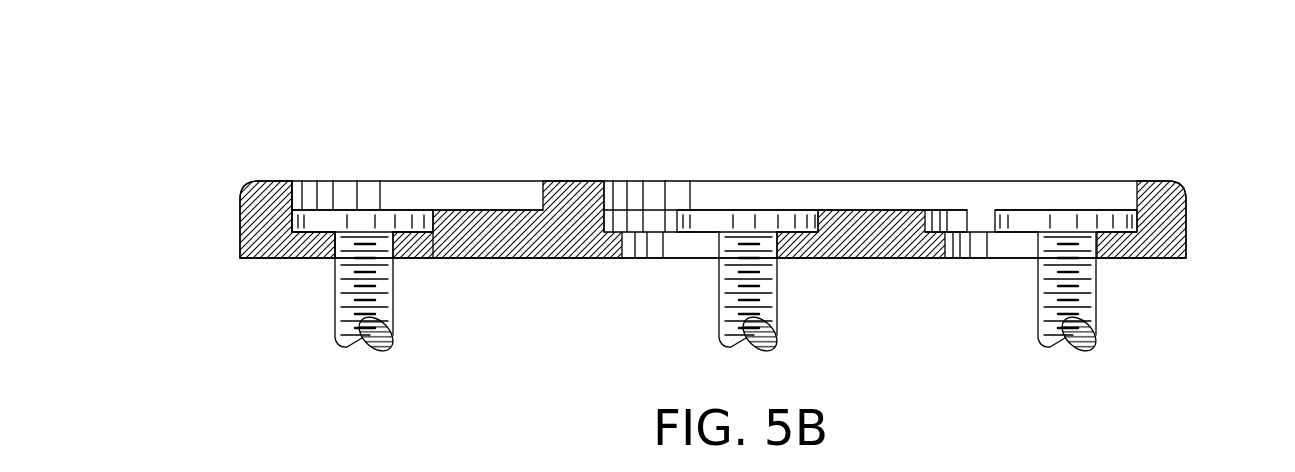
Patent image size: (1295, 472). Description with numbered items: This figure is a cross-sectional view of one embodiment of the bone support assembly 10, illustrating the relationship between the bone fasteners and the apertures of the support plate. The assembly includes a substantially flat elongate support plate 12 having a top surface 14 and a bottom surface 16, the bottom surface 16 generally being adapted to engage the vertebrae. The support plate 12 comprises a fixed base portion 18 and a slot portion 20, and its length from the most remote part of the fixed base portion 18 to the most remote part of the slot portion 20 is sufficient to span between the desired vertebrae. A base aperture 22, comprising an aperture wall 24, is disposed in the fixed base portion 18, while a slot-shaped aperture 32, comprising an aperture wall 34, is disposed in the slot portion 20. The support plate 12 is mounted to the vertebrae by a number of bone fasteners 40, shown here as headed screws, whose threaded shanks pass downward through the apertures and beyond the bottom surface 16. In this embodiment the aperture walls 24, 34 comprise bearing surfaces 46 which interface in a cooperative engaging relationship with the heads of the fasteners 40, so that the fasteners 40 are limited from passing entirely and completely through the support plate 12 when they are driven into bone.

The bone support assembly 10 is at (1092, 104).
The support plate 12 is at (558, 178).
The top surface 14 is at (583, 181).
The bottom surface 16 is at (480, 258).
The fixed base portion 18 is at (288, 181).
The slot portion 20 is at (783, 181).
The base aperture 22 is at (400, 245).
The aperture wall 24 is at (318, 246).
The slot-shaped aperture 32 is at (666, 252).
The aperture wall 34 is at (632, 248).
The bone fastener 40 is at (335, 297).
The bearing surface 46 is at (303, 230).